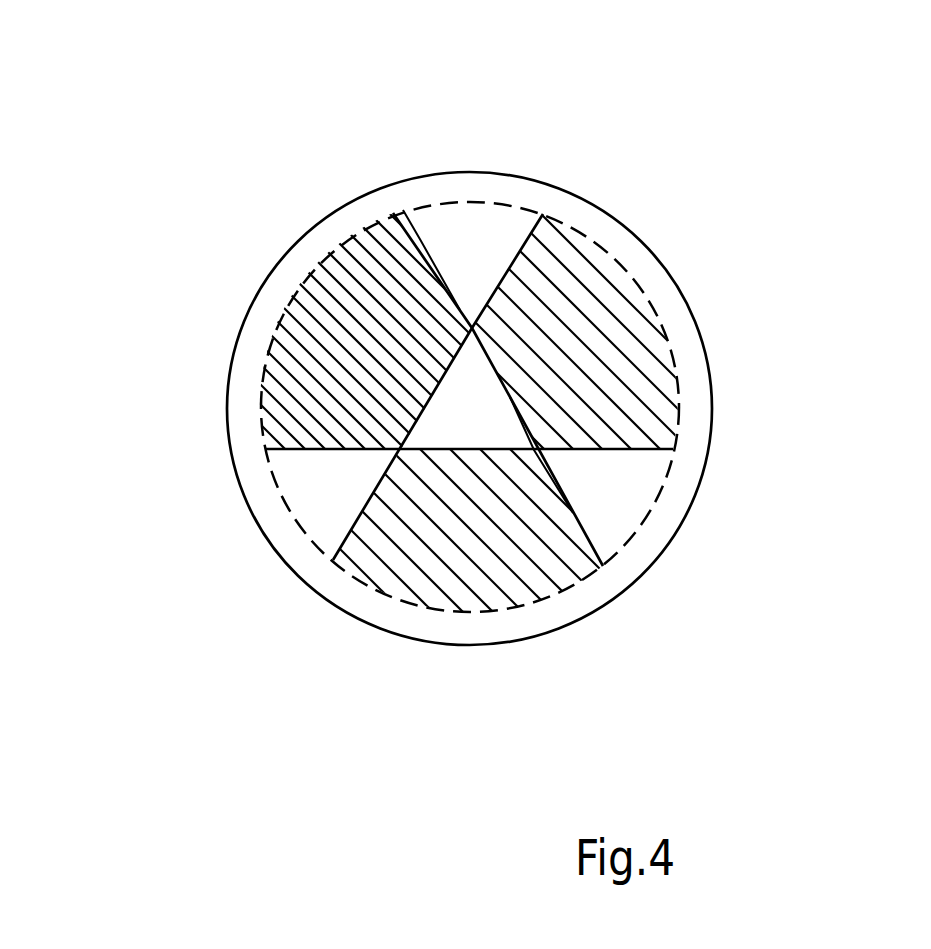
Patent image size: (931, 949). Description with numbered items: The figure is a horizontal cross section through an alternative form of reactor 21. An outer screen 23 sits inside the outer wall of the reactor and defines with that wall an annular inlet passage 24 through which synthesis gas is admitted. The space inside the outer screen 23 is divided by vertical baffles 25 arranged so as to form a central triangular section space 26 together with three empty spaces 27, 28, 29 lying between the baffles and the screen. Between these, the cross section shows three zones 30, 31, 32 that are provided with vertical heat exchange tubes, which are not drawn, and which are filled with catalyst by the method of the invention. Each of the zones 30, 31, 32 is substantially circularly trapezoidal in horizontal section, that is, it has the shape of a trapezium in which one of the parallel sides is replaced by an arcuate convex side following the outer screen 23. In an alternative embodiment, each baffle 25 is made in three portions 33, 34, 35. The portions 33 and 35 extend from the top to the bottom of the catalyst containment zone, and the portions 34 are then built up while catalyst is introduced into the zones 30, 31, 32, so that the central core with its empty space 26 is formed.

The reactor 21 is at (543, 177).
The outer screen 23 is at (652, 518).
The annular inlet passage 24 is at (680, 338).
The vertical baffle 25 is at (356, 266).
The central triangular section space 26 is at (445, 423).
The empty space 27 is at (300, 523).
The empty space 28 is at (618, 525).
The empty space 29 is at (460, 250).
The zone 30 is at (389, 577).
The zone 31 is at (340, 327).
The zone 32 is at (563, 315).
The baffle portion 33 is at (421, 234).
The baffle portion 34 is at (553, 478).
The baffle portion 35 is at (587, 530).